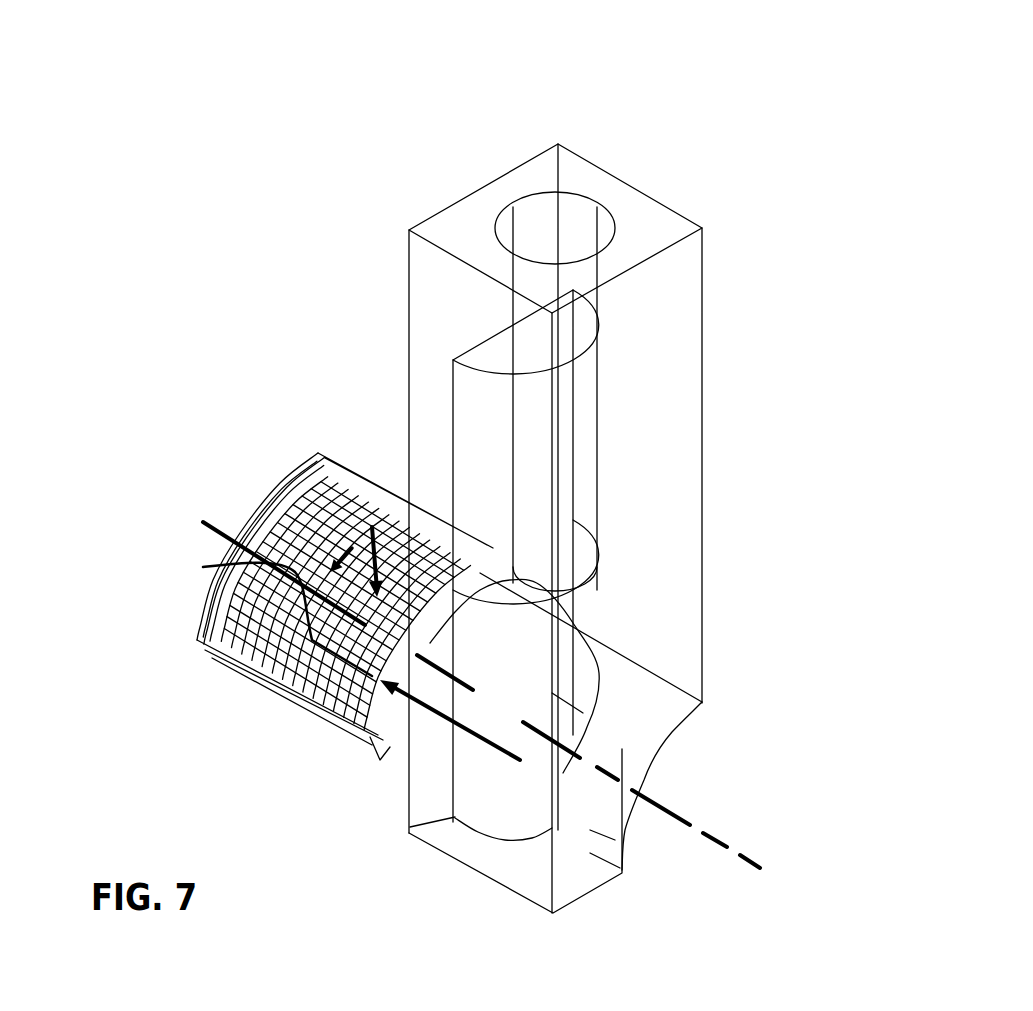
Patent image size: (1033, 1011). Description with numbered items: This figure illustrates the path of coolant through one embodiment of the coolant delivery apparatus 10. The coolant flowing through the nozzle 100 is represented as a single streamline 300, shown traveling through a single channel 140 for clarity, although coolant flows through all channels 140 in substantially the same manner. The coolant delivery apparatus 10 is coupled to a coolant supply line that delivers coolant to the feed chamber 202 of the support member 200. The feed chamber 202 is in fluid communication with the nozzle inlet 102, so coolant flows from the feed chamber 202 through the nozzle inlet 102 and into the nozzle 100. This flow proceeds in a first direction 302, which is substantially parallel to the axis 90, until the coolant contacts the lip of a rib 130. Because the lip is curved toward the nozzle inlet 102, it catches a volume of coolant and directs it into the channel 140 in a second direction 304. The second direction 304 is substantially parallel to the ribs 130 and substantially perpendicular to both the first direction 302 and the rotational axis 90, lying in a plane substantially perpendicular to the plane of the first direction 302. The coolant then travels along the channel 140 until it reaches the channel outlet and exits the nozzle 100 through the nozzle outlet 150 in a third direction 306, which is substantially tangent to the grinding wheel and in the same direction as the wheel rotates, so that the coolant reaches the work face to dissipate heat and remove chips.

The coolant delivery apparatus 10 is at (770, 290).
The axis 90 is at (505, 709).
The nozzle 100 is at (144, 650).
The nozzle inlet 102 is at (477, 800).
The rib 130 is at (407, 492).
The channel 140 is at (281, 698).
The nozzle outlet 150 is at (377, 515).
The support member 200 is at (386, 154).
The feed chamber 202 is at (592, 194).
The streamline 300 is at (355, 763).
The first direction 302 is at (410, 830).
The second direction 304 is at (223, 570).
The third direction 306 is at (430, 535).